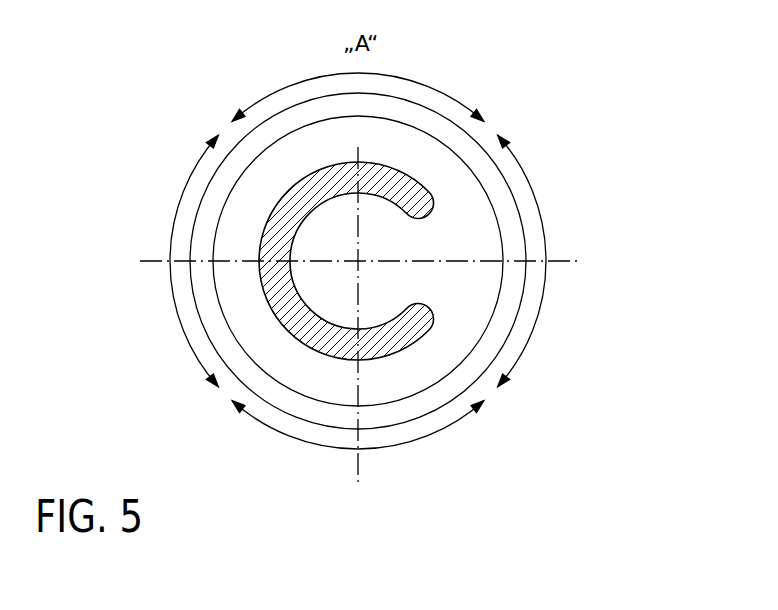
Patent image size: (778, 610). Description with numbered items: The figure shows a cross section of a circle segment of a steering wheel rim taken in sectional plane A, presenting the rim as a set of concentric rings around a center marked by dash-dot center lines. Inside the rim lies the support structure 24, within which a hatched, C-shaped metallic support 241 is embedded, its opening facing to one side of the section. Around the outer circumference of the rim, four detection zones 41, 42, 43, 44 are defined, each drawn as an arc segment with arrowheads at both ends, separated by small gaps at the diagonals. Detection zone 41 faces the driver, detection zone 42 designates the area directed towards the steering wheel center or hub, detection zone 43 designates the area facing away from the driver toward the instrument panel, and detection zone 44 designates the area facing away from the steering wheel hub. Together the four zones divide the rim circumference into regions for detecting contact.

The support structure 24 is at (246, 195).
The metallic support 241 is at (325, 342).
The detection zone 41 is at (544, 230).
The detection zone 42 is at (417, 80).
The detection zone 43 is at (177, 313).
The detection zone 44 is at (417, 439).